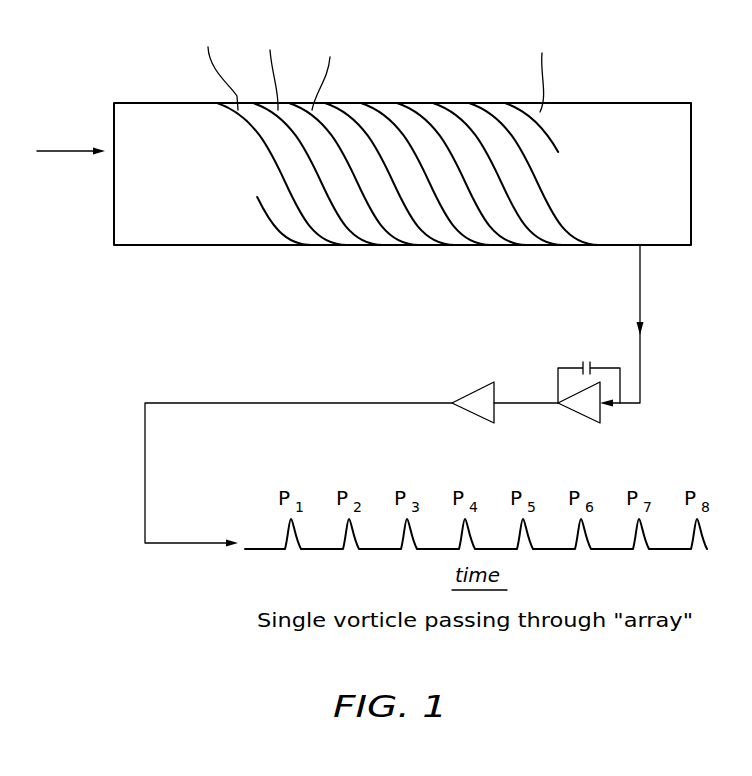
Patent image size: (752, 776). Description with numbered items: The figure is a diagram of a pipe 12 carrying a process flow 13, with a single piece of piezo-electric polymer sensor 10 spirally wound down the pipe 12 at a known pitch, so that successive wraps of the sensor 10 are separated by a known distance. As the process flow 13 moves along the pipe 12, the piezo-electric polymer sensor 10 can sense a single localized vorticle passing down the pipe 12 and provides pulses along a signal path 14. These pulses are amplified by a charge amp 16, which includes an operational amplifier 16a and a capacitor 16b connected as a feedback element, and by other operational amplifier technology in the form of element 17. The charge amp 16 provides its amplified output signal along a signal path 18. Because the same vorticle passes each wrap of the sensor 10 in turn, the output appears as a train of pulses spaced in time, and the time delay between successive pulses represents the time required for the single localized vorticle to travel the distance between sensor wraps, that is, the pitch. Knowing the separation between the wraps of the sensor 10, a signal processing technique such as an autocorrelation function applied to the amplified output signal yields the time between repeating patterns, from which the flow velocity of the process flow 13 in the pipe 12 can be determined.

The piezo-electric polymer sensor 10 is at (265, 228).
The pipe 12 is at (644, 103).
The process flow 13 is at (59, 167).
The signal path 14 is at (643, 297).
The charge amp 16 is at (595, 368).
The operational amplifier 16a is at (575, 410).
The capacitor 16b is at (589, 363).
The operational amplifier element 17 is at (468, 395).
The signal path 18 is at (518, 400).